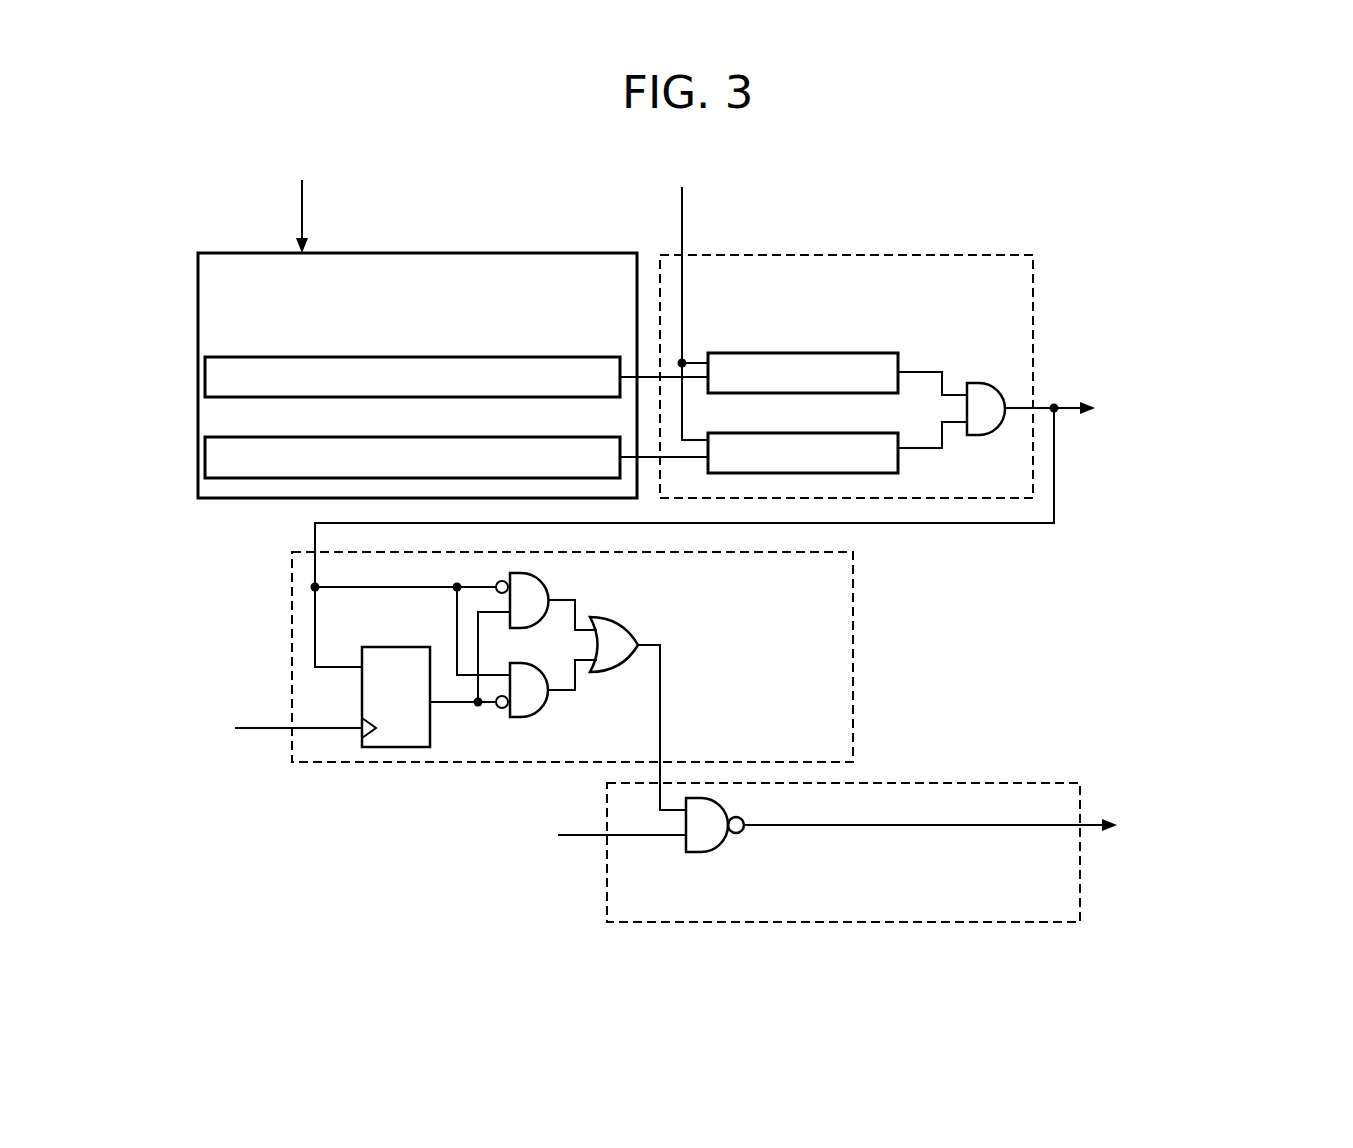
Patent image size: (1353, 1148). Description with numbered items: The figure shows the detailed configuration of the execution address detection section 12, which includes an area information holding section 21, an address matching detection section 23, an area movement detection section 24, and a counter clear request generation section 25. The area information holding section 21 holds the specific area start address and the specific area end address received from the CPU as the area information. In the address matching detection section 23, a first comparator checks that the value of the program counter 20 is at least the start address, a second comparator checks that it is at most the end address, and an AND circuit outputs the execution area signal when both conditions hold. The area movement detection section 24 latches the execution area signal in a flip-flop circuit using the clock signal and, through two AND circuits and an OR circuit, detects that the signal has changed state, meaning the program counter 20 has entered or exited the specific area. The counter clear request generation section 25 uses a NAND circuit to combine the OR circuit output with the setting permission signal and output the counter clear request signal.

The execution address detection section 12 is at (1043, 138).
The program counter 20 is at (800, 295).
The area information holding section 21 is at (365, 253).
The address matching detection section 23 is at (945, 255).
The area movement detection section 24 is at (855, 573).
The counter clear request generation section 25 is at (880, 780).